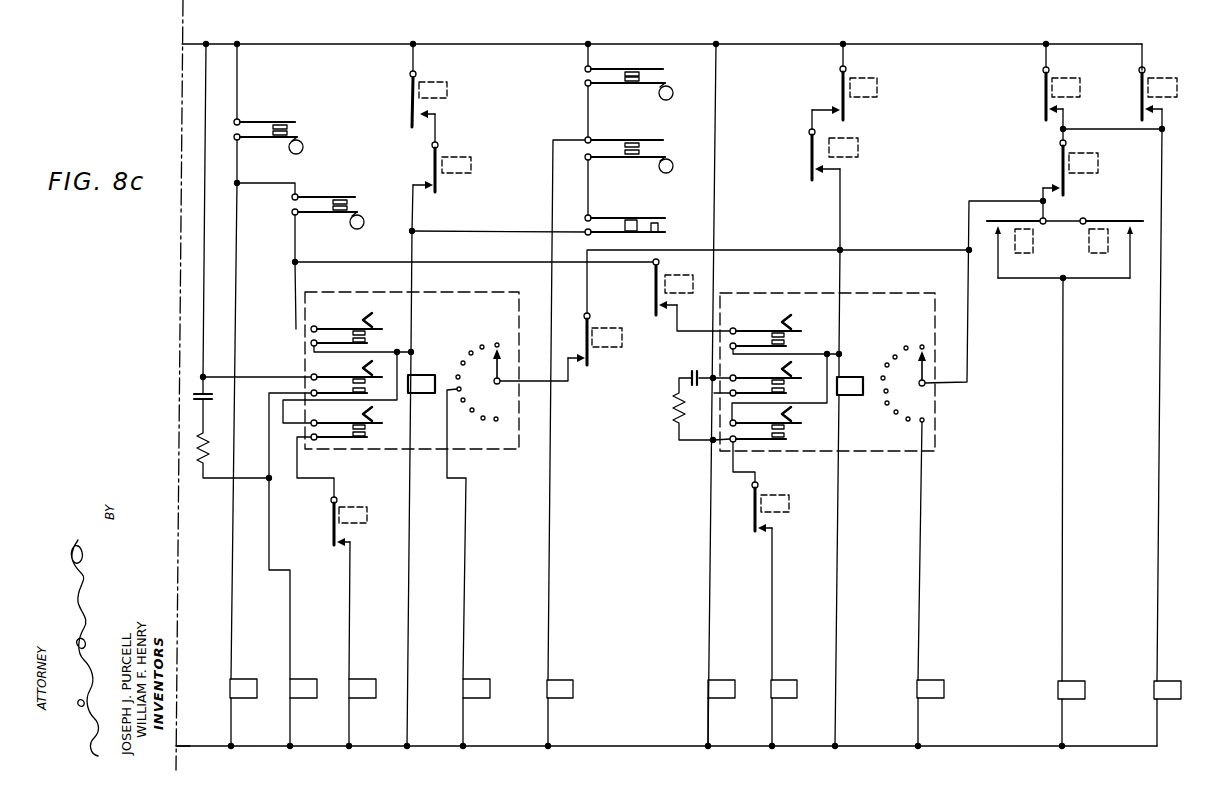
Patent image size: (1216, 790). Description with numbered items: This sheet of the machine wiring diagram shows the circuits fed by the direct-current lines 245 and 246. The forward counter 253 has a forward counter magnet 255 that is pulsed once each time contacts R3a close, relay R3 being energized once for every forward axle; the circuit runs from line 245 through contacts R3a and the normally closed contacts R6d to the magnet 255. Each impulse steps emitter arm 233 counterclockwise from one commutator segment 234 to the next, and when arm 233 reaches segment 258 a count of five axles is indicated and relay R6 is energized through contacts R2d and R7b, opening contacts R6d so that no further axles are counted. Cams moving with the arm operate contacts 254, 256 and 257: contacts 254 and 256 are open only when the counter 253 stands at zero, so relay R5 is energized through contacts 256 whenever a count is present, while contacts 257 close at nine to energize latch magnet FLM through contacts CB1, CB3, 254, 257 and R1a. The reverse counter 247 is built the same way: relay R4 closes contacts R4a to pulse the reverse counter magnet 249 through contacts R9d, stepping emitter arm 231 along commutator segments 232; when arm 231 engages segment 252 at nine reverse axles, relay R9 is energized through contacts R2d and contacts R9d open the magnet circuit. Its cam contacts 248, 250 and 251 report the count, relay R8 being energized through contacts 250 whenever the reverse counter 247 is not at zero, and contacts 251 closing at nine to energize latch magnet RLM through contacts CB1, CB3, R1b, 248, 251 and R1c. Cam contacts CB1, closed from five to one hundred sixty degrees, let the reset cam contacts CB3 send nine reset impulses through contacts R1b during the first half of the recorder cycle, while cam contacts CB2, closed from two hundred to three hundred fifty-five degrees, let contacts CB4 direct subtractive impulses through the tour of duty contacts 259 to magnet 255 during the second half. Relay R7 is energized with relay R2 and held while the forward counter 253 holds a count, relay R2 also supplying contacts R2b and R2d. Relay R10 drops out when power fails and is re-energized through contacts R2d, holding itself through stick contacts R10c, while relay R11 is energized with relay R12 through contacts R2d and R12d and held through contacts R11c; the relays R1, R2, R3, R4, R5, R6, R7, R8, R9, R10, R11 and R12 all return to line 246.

The line 245 is at (501, 44).
The line 246 is at (513, 747).
The forward counter 253 is at (486, 449).
The tens contacts 254 is at (368, 340).
The forward counter magnet 255 is at (415, 375).
The contacts 256 is at (370, 383).
The contacts 257 is at (370, 430).
The commutator segment 258 is at (462, 390).
The emitter arm 233 is at (501, 373).
The commutator segment 234 is at (495, 343).
The reverse counter 247 is at (892, 451).
The tens contacts 248 is at (795, 342).
The reverse counter magnet 249 is at (847, 395).
The contacts 250 is at (788, 386).
The contacts 251 is at (793, 430).
The commutator segment 252 is at (920, 422).
The emitter arm 231 is at (927, 379).
The commutator segment 232 is at (920, 346).
The tour of duty contacts 259 is at (640, 221).
The cam contacts CB1 is at (299, 134).
The cam contacts CB2 is at (650, 80).
The reset cam contacts CB3 is at (358, 208).
The cam contacts CB4 is at (660, 153).
The relay R1 is at (680, 273).
The relay R2 is at (1163, 79).
The relay R3 is at (437, 80).
The relay R4 is at (850, 157).
The relay R5 is at (299, 679).
The relay R6 is at (444, 157).
The relay R7 is at (620, 340).
The relay R8 is at (717, 680).
The relay R9 is at (867, 79).
The relay R10 is at (1067, 79).
The relay R11 is at (1032, 256).
The relay R12 is at (1088, 255).
The latch magnet FLM is at (358, 679).
The latch magnet RLM is at (780, 680).
The contacts R1a is at (335, 548).
The contacts R1b is at (653, 300).
The contacts R1c is at (756, 534).
The relay contact R2b is at (1138, 117).
The contacts R2d is at (1078, 184).
The contacts R3a is at (414, 128).
The contacts R4a is at (813, 182).
The contacts R6d is at (438, 192).
The contacts R7b is at (588, 366).
The contacts R9d is at (844, 118).
The stick contacts R10c is at (1049, 134).
The contacts R11c is at (986, 221).
The contacts R12d is at (1140, 214).